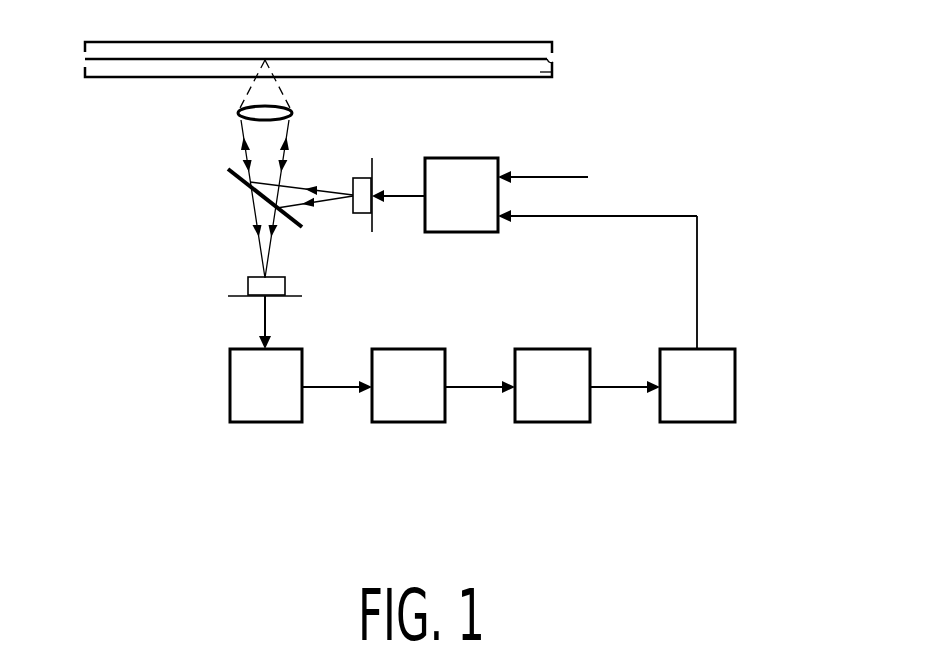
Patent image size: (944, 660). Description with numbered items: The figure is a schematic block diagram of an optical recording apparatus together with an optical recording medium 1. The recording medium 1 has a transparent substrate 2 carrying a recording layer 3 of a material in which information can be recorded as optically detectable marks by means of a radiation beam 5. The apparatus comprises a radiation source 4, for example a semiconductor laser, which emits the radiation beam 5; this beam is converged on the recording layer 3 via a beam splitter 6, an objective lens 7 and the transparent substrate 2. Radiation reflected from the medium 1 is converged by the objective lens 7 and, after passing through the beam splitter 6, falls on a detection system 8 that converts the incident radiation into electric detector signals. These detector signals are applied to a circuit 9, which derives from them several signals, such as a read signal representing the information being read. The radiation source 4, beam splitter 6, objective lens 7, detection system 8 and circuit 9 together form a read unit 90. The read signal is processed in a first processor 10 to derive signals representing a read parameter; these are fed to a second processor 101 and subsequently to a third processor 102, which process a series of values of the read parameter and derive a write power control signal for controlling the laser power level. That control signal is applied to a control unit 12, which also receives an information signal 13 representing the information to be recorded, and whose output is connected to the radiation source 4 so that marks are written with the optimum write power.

The optical recording medium 1 is at (581, 36).
The transparent substrate 2 is at (552, 72).
The recording layer 3 is at (553, 62).
The radiation source 4 is at (362, 215).
The radiation beam 5 is at (323, 190).
The beam splitter 6 is at (232, 174).
The objective lens 7 is at (238, 112).
The detection system 8 is at (247, 288).
The circuit 9 is at (258, 424).
The first processor 10 is at (410, 424).
The second processor 101 is at (565, 424).
The third processor 102 is at (697, 424).
The control unit 12 is at (464, 233).
The information signal 13 is at (563, 173).
The read unit 90 is at (100, 237).